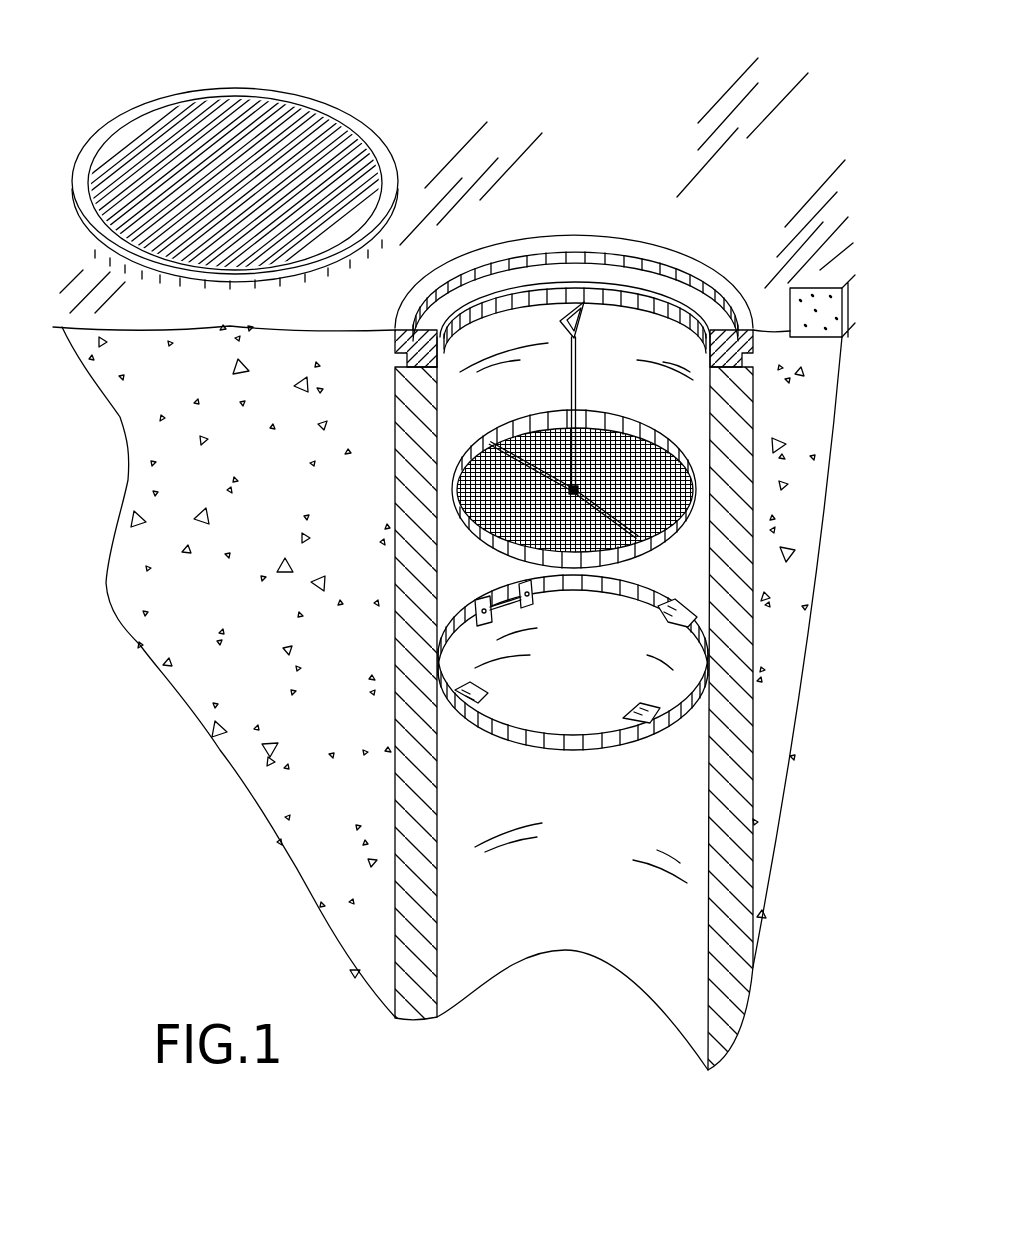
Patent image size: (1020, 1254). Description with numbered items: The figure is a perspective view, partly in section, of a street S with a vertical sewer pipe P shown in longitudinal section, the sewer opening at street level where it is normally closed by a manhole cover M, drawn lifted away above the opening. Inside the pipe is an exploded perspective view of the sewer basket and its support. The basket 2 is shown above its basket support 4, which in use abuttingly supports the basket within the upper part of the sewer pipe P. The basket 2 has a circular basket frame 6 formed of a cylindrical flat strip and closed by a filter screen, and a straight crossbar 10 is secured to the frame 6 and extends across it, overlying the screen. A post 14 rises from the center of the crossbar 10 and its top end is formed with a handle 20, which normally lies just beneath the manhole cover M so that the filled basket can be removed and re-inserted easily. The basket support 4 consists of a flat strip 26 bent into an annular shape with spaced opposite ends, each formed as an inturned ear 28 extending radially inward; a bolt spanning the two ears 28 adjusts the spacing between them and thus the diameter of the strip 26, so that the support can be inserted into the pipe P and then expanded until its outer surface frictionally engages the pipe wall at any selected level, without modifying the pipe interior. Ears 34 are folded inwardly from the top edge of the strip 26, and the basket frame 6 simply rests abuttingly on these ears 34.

The manhole cover M is at (168, 93).
The street S is at (762, 220).
The sewer pipe P is at (574, 652).
The basket 2 is at (660, 565).
The basket support 4 is at (660, 758).
The basket frame 6 is at (635, 418).
The crossbar 10 is at (487, 443).
The post 14 is at (577, 387).
The handle 20 is at (587, 327).
The flat strip 26 is at (617, 747).
The inturned ear 28 is at (537, 603).
The basket frame engaging ears 34 is at (627, 712).